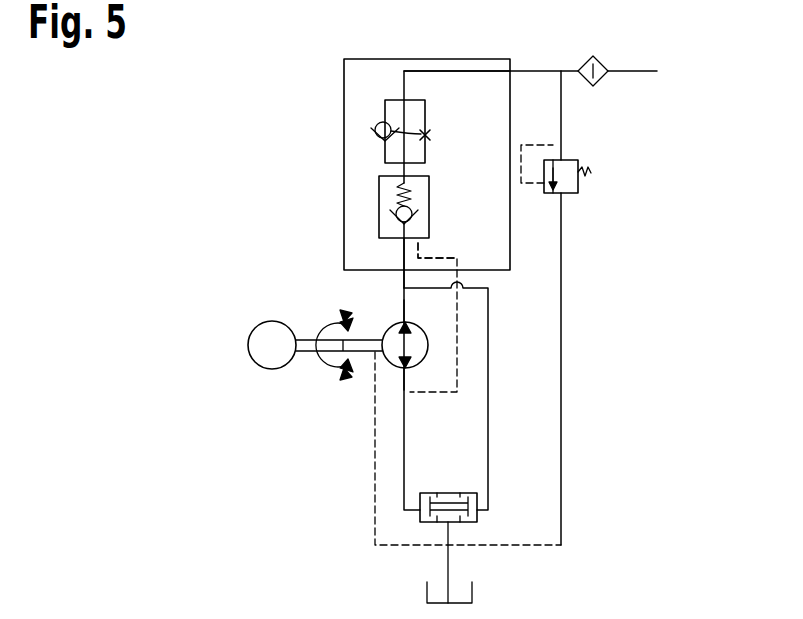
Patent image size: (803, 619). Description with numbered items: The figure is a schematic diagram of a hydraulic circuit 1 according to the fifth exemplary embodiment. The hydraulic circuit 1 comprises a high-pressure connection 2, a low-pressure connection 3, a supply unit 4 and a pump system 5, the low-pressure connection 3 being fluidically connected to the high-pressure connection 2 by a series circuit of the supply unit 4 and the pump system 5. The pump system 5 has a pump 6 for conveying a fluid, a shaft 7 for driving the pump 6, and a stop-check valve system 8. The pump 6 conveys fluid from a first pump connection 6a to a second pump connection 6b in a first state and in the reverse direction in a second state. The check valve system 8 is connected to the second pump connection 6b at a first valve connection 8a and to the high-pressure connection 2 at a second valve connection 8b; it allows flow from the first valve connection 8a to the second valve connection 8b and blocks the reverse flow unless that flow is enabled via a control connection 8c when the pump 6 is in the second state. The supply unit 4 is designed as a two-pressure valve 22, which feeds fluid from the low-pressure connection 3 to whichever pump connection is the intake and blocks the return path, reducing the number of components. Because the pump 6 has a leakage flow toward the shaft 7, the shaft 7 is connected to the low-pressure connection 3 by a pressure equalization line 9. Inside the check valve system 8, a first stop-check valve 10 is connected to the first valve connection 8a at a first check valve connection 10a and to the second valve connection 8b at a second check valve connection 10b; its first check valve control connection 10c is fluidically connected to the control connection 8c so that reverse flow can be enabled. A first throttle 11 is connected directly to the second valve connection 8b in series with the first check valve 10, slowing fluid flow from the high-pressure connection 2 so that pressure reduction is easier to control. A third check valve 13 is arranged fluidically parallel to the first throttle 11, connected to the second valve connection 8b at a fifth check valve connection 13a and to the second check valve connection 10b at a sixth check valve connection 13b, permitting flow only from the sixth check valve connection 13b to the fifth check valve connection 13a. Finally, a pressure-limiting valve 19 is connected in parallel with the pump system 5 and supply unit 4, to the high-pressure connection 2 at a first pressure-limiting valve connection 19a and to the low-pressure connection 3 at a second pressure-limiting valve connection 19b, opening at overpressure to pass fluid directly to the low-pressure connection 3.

The hydraulic circuit 1 is at (175, 113).
The high-pressure connection 2 is at (636, 71).
The low-pressure connection 3 is at (450, 568).
The supply unit 4 is at (494, 513).
The pump system 5 is at (355, 408).
The pump 6 is at (380, 351).
The first pump connection 6a is at (420, 370).
The second pump connection 6b is at (420, 325).
The shaft 7 is at (303, 352).
The stop-check valve system 8 is at (344, 106).
The first valve connection 8a is at (404, 271).
The second valve connection 8b is at (511, 70).
The control connection 8c is at (458, 271).
The pressure equalization line 9 is at (372, 527).
The first stop-check valve 10 is at (379, 205).
The first check valve connection 10a is at (404, 246).
The second check valve connection 10b is at (404, 177).
The first check valve control connection 10c is at (437, 251).
The first throttle 11 is at (428, 134).
The third check valve 13 is at (374, 130).
The fifth check valve connection 13a is at (383, 122).
The sixth check valve connection 13b is at (375, 146).
The pressure-limiting valve 19 is at (578, 183).
The first pressure-limiting valve connection 19a is at (566, 158).
The second pressure-limiting valve connection 19b is at (562, 194).
The two-pressure valve 22 is at (446, 493).